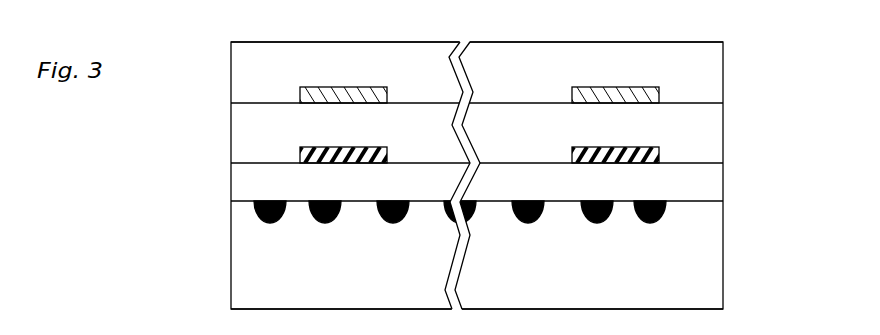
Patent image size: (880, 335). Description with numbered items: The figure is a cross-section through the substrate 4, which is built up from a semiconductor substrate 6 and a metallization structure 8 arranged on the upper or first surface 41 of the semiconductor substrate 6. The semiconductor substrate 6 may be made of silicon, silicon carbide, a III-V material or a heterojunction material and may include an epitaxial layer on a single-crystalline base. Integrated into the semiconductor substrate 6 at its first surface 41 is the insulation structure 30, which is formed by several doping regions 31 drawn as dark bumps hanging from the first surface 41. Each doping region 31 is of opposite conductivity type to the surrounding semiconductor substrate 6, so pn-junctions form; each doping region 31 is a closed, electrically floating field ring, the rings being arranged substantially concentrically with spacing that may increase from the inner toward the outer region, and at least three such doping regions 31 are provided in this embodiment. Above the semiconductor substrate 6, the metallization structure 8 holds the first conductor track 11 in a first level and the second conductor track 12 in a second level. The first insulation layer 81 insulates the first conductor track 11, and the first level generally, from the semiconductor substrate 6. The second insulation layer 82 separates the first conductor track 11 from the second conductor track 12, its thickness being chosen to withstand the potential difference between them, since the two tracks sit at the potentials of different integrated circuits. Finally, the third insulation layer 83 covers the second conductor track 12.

The substrate 4 is at (752, 50).
The semiconductor substrate 6 is at (238, 294).
The metallization structure 8 is at (214, 42).
The first conductor track 11 is at (300, 150).
The second conductor track 12 is at (300, 88).
The insulation structure 30 is at (431, 239).
The doping region 31 is at (272, 223).
The first surface 41 is at (707, 201).
The first insulation layer 81 is at (240, 186).
The second insulation layer 82 is at (500, 110).
The third insulation layer 83 is at (397, 58).